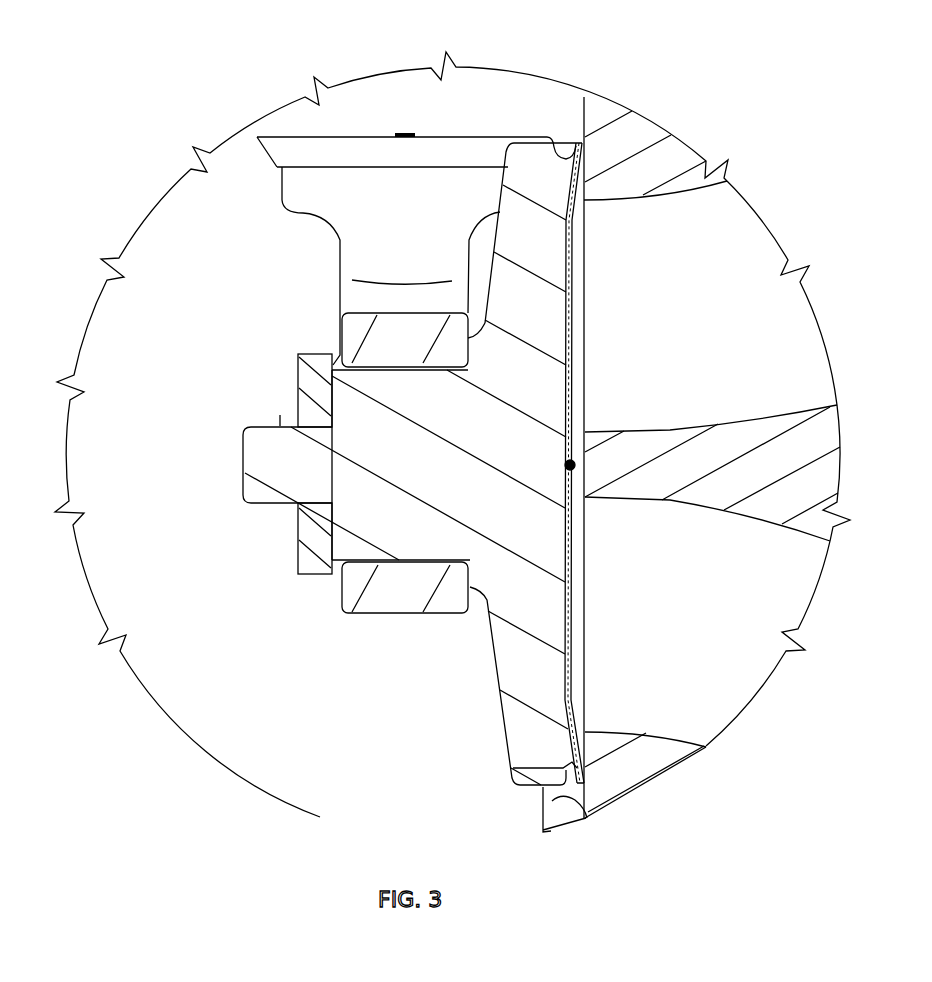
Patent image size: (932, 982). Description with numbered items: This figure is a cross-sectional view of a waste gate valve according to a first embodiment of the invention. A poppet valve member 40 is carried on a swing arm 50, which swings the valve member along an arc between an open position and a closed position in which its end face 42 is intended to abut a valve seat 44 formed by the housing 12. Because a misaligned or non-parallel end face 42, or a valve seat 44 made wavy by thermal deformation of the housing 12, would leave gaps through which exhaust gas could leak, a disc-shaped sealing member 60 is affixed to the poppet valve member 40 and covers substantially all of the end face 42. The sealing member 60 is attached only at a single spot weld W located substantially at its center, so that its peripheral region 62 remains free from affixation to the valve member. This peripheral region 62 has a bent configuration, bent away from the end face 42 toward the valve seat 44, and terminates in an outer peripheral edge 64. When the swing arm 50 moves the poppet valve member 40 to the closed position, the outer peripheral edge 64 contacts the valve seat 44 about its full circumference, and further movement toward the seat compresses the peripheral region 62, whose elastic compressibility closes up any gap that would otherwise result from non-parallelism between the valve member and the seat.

The housing 12 is at (793, 443).
The poppet valve member 40 is at (520, 668).
The end face 42 is at (505, 768).
The valve seat 44 is at (587, 818).
The swing arm 50 is at (395, 247).
The sealing member 60 is at (570, 203).
The peripheral region 62 is at (554, 148).
The outer peripheral edge 64 is at (584, 140).
The spot weld W is at (575, 465).